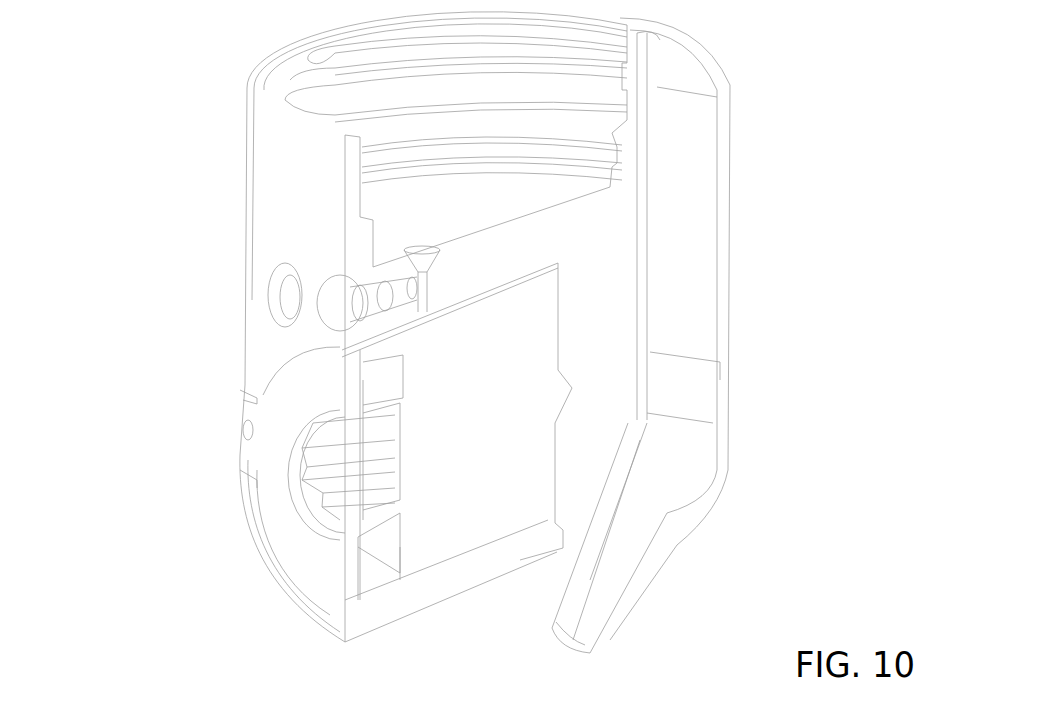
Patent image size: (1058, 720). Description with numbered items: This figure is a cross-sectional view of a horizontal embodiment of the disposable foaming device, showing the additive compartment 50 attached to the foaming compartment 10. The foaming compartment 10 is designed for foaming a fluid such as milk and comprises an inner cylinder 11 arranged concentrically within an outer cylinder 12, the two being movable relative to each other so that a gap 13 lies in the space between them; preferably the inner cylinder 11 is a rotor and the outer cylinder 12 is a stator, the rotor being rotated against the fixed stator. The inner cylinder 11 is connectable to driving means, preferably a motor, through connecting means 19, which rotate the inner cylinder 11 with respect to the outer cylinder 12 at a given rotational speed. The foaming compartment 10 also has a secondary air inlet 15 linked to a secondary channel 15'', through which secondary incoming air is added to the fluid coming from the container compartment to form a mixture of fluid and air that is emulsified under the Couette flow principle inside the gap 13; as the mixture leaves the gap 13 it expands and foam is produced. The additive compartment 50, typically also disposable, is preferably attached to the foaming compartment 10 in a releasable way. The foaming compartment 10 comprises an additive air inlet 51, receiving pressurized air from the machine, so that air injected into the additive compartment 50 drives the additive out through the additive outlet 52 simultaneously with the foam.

The foaming compartment 10 is at (247, 177).
The inner cylinder 11 is at (513, 470).
The outer cylinder 12 is at (358, 583).
The gap 13 is at (478, 297).
The secondary air inlet 15 is at (224, 313).
The secondary channel 15'' is at (616, 279).
The connecting means 19 is at (330, 496).
The additive compartment 50 is at (703, 153).
The additive air inlet 51 is at (285, 295).
The additive outlet 52 is at (582, 625).